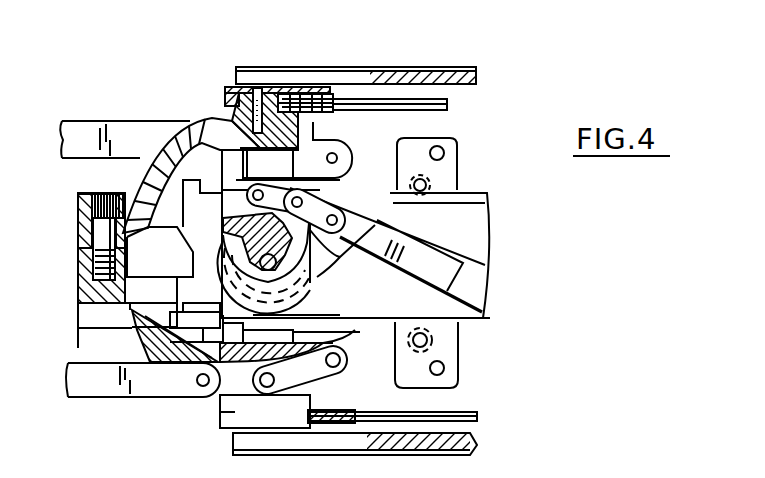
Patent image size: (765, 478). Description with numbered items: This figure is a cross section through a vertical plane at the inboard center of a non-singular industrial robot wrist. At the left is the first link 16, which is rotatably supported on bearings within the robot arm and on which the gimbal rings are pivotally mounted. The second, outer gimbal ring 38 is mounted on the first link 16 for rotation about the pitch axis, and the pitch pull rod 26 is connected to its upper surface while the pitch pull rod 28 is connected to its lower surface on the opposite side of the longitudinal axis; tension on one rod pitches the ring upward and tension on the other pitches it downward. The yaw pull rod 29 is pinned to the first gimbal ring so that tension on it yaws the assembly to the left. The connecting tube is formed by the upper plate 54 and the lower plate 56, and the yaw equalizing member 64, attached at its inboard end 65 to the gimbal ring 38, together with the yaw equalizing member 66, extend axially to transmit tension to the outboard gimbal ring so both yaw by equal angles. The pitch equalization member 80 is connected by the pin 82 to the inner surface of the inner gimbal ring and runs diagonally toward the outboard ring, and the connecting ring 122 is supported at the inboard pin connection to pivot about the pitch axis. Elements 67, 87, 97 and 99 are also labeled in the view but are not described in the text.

The first link 16 is at (222, 120).
The pull rod 26 is at (121, 121).
The pull rod 28 is at (152, 398).
The yaw pull rod 29 is at (213, 308).
The second gimbal ring 38 is at (228, 87).
The upper plate 54 is at (446, 74).
The lower plate 56 is at (472, 445).
The yaw equalizing member 64 is at (447, 109).
The inboard end 65 is at (258, 95).
The yaw equalizing member 66 is at (450, 412).
The lower pin 67 is at (338, 418).
The pitch equalization member 80 is at (447, 237).
The pin 82 is at (250, 197).
The link 87 is at (336, 204).
The upper body 97 is at (338, 152).
The lower link 99 is at (340, 330).
The connecting ring 122 is at (486, 198).